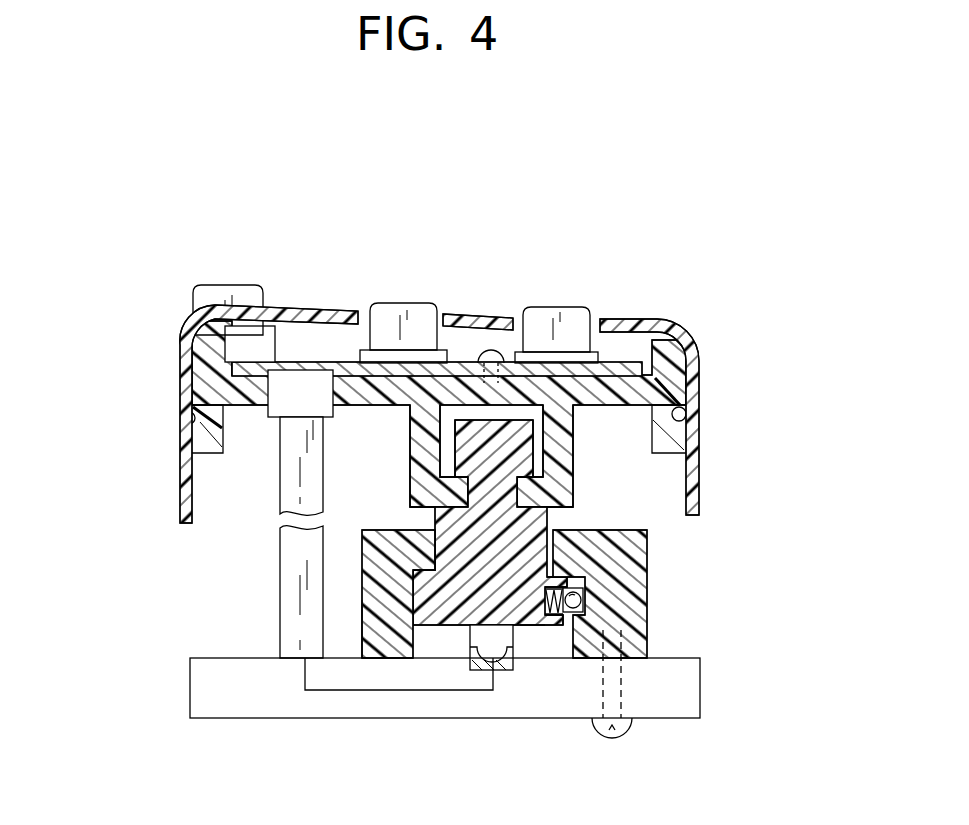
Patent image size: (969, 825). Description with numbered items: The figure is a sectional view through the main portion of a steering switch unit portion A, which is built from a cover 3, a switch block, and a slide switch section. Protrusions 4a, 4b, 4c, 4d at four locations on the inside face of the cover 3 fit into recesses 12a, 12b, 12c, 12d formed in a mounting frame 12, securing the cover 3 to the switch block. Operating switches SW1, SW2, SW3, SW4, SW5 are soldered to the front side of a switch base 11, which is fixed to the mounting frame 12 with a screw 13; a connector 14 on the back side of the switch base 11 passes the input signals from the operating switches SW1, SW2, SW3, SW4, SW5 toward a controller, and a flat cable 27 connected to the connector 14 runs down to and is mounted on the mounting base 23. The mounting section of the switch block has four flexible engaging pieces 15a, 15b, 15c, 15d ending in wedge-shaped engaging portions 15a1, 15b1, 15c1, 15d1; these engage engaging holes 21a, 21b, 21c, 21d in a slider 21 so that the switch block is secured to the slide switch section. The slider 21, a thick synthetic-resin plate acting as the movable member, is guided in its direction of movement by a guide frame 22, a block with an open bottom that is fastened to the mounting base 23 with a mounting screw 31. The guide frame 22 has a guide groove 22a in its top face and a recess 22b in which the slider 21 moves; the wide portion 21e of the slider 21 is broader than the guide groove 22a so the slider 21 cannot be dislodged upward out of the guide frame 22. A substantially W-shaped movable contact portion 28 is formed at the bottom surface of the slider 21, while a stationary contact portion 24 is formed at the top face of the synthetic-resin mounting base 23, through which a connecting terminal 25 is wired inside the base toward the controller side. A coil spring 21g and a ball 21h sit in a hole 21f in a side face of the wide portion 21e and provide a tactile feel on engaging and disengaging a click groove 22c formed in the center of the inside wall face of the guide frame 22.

The steering switch unit portion A is at (626, 176).
The cover 3 is at (660, 322).
The protrusion 4a is at (127, 416).
The protrusion 4b is at (184, 412).
The protrusion 4c is at (739, 399).
The protrusion 4d is at (685, 412).
The switch base 11 is at (614, 368).
The mounting frame 12 is at (443, 425).
The recess 12a is at (128, 440).
The recess 12b is at (195, 452).
The recess 12c is at (744, 398).
The recess 12d is at (665, 385).
The screw 13 is at (481, 354).
The connector 14 is at (300, 385).
The flexible engaging piece 15a is at (675, 456).
The flexible engaging piece 15b is at (575, 433).
The engaging portion 15a1 is at (685, 486).
The engaging portion 15b1 is at (575, 490).
The flexible engaging piece 15c is at (253, 461).
The flexible engaging piece 15d is at (437, 442).
The engaging portion 15c1 is at (283, 522).
The engaging portion 15d1 is at (452, 483).
The slider 21 is at (477, 604).
The engaging hole 21a is at (675, 477).
The engaging hole 21b is at (555, 500).
The engaging hole 21c is at (295, 512).
The engaging hole 21d is at (455, 500).
The wide portion 21e is at (533, 626).
The hole 21f is at (540, 630).
The coil spring 21g is at (562, 581).
The ball 21h is at (582, 600).
The guide frame 22 is at (567, 673).
The guide groove 22a is at (425, 650).
The recess 22b is at (410, 660).
The click groove 22c is at (558, 603).
The mounting base 23 is at (493, 709).
The stationary contact portion 24 is at (492, 662).
The connecting terminal 25 is at (340, 690).
The flat cable 27 is at (300, 637).
The movable contact portion 28 is at (476, 720).
The mounting screw 31 is at (628, 730).
The operating switch SW1 is at (280, 267).
The operating switch SW2 is at (280, 267).
The operating switch SW3 is at (222, 300).
The operating switch SW4 is at (412, 325).
The operating switch SW5 is at (555, 328).